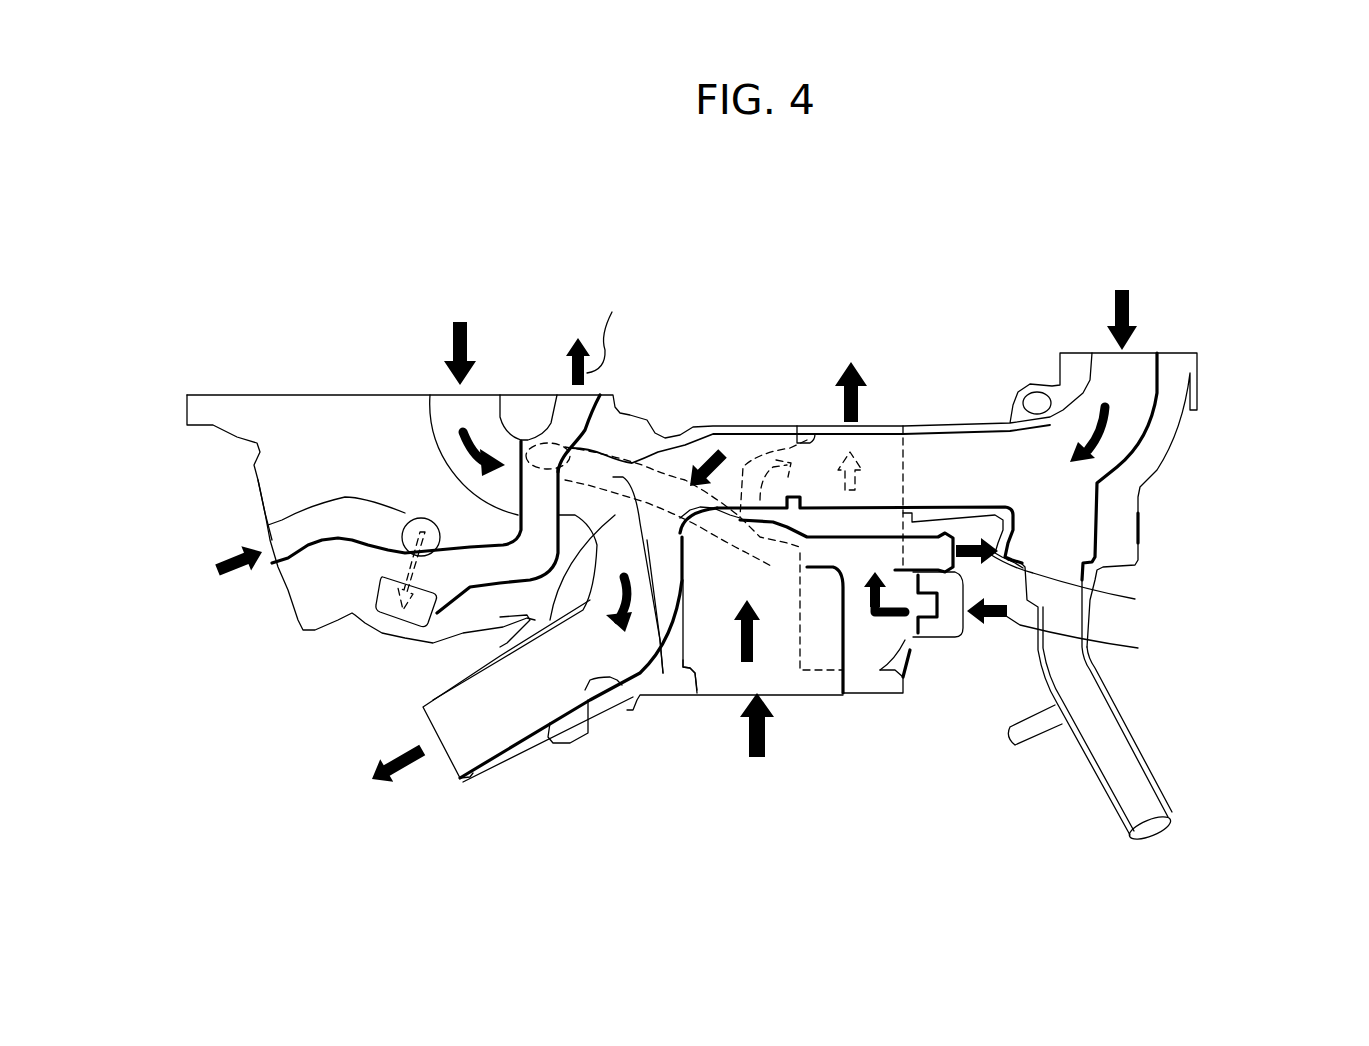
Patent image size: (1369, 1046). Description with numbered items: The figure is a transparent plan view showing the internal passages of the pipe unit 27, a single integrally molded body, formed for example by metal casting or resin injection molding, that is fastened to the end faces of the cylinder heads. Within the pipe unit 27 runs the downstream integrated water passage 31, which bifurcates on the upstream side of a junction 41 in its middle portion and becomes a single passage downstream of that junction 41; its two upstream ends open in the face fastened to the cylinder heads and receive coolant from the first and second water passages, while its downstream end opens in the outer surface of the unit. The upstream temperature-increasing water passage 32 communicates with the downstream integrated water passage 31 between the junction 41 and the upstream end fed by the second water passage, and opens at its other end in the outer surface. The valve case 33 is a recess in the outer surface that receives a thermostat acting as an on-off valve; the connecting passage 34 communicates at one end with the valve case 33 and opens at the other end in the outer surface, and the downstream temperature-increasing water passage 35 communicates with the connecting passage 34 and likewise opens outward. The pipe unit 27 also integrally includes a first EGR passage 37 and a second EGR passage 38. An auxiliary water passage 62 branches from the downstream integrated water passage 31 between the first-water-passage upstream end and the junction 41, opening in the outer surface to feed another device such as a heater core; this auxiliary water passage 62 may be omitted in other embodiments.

The pipe unit 27 is at (962, 328).
The downstream integrated water passage 31 is at (588, 700).
The upstream temperature-increasing water passage 32 is at (657, 700).
The valve case 33 is at (690, 670).
The connecting passage 34 is at (812, 428).
The downstream temperature-increasing water passage 35 is at (918, 617).
The first EGR passage 37 is at (312, 542).
The second EGR passage 38 is at (480, 590).
The junction 41 is at (550, 620).
The auxiliary water passage 62 is at (1103, 708).